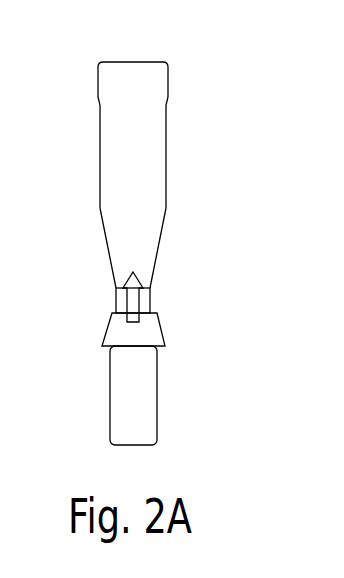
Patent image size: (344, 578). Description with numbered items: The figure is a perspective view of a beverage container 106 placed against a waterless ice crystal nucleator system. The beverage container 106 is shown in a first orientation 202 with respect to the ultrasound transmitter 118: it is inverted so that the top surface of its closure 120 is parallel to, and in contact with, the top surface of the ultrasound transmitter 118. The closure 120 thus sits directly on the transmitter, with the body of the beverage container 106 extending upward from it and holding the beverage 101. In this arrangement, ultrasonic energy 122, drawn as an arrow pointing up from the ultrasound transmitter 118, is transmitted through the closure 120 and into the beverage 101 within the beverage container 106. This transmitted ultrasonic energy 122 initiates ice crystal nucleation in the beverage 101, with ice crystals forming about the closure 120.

The beverage container 106 is at (168, 80).
The first orientation 202 is at (166, 133).
The beverage 101 is at (152, 203).
The closure 120 is at (152, 293).
The ultrasonic energy 122 is at (117, 302).
The ultrasound transmitter 118 is at (160, 330).